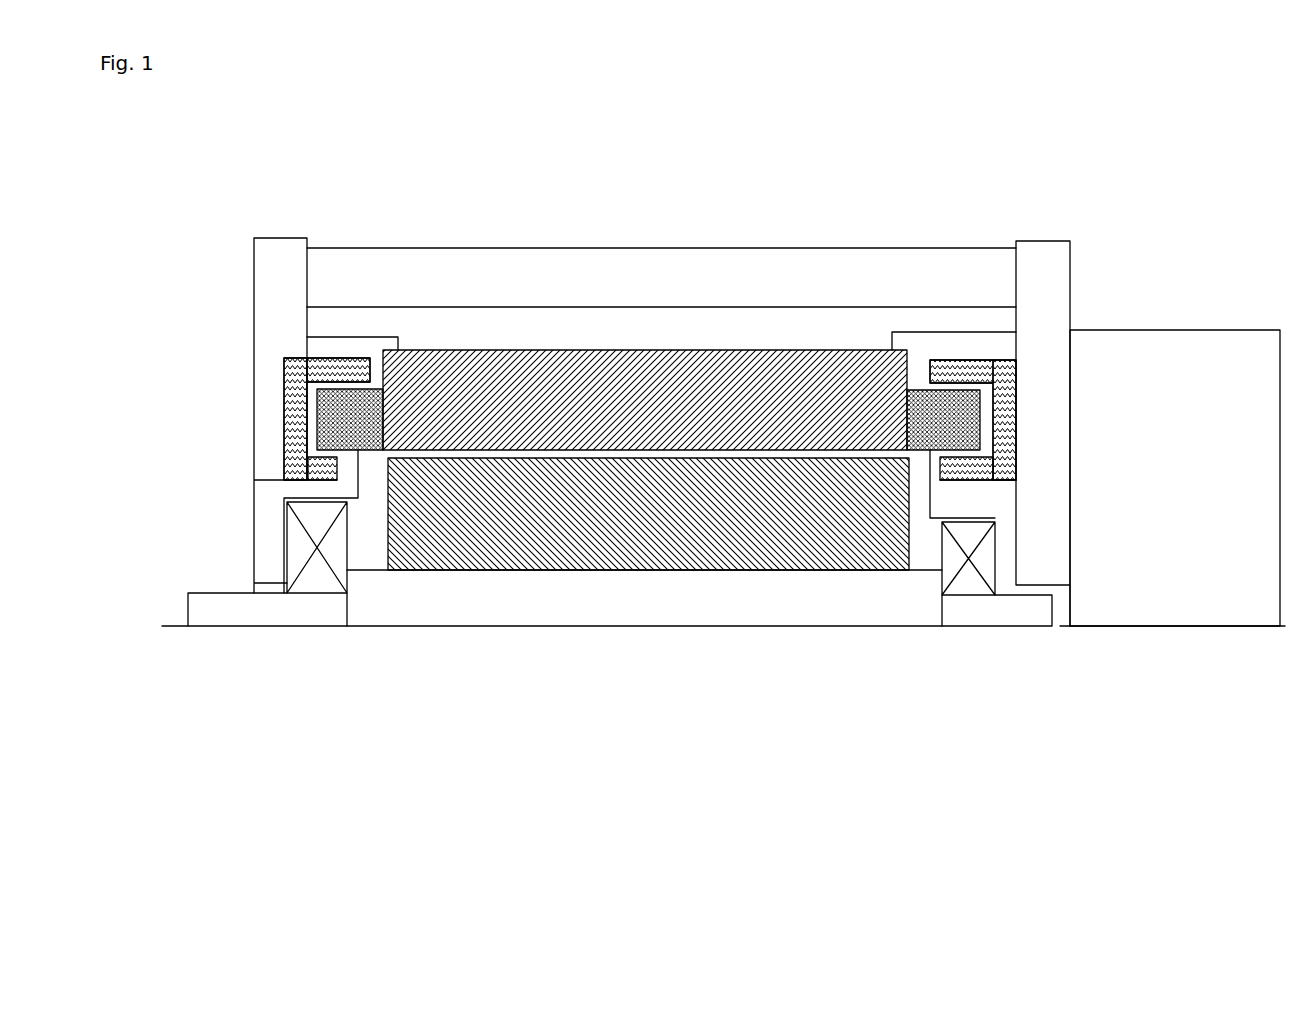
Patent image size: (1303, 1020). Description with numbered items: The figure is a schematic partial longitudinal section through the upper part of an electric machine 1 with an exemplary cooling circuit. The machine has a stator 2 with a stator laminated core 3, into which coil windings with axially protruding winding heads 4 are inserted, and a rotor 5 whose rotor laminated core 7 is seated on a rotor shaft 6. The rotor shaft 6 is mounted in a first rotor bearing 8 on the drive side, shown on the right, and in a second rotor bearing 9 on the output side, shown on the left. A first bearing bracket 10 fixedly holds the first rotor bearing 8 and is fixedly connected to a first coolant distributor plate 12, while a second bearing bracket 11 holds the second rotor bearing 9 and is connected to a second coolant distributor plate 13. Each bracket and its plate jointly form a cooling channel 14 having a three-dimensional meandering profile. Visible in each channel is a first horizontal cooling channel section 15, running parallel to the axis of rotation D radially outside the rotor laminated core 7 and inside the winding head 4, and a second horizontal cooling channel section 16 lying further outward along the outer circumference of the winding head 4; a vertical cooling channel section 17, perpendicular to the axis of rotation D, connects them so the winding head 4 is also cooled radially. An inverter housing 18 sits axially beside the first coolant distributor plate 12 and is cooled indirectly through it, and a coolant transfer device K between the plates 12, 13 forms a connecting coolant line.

The electric machine 1 is at (704, 725).
The stator 2 is at (540, 333).
The stator laminated core 3 is at (438, 377).
The winding head 4 is at (379, 405).
The rotor 5 is at (669, 590).
The rotor shaft 6 is at (472, 595).
The rotor laminated core 7 is at (490, 490).
The first rotor bearing 8 is at (950, 542).
The second rotor bearing 9 is at (317, 578).
The first bearing bracket 10 is at (995, 503).
The second bearing bracket 11 is at (271, 518).
The first coolant distributor plate 12 is at (1052, 350).
The second coolant distributor plate 13 is at (270, 305).
The cooling channel 14 is at (264, 410).
The first horizontal cooling channel section 15 is at (319, 470).
The second horizontal cooling channel section 16 is at (335, 370).
The vertical cooling channel section 17 is at (295, 385).
The inverter housing 18 is at (1180, 575).
The coolant transfer device K is at (617, 278).
The axis of rotation D is at (714, 624).